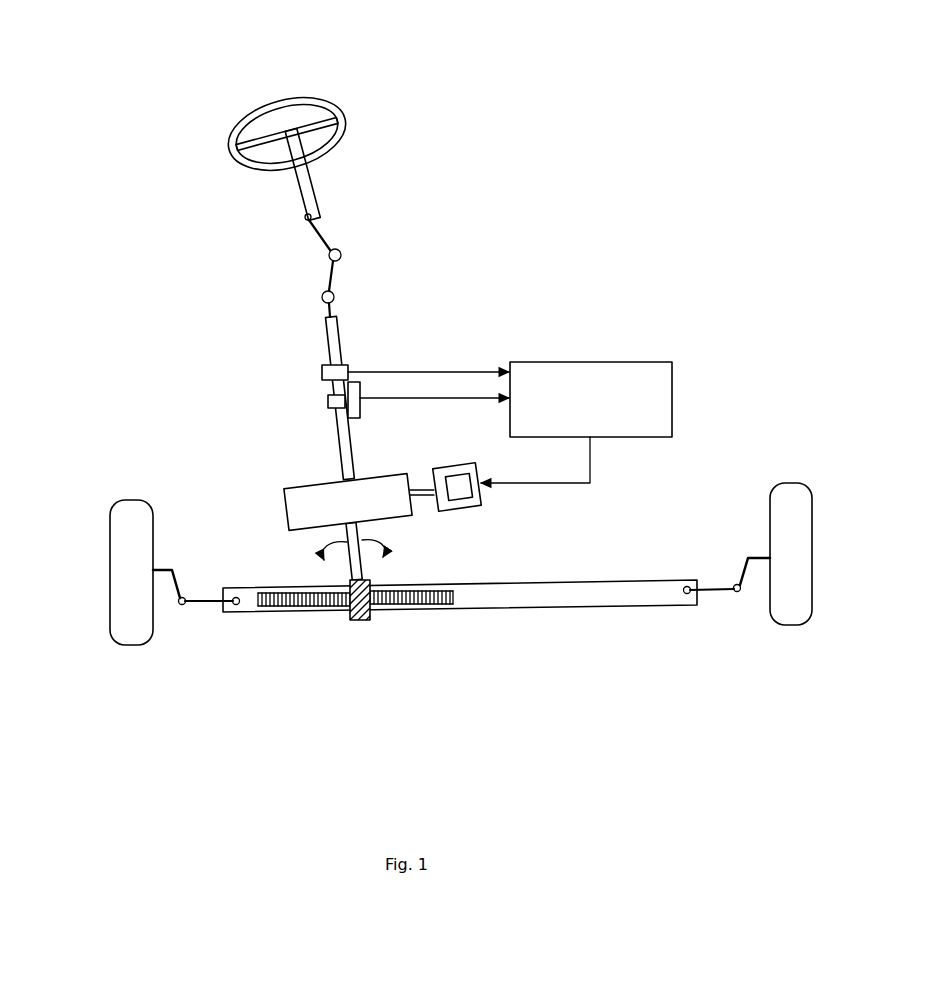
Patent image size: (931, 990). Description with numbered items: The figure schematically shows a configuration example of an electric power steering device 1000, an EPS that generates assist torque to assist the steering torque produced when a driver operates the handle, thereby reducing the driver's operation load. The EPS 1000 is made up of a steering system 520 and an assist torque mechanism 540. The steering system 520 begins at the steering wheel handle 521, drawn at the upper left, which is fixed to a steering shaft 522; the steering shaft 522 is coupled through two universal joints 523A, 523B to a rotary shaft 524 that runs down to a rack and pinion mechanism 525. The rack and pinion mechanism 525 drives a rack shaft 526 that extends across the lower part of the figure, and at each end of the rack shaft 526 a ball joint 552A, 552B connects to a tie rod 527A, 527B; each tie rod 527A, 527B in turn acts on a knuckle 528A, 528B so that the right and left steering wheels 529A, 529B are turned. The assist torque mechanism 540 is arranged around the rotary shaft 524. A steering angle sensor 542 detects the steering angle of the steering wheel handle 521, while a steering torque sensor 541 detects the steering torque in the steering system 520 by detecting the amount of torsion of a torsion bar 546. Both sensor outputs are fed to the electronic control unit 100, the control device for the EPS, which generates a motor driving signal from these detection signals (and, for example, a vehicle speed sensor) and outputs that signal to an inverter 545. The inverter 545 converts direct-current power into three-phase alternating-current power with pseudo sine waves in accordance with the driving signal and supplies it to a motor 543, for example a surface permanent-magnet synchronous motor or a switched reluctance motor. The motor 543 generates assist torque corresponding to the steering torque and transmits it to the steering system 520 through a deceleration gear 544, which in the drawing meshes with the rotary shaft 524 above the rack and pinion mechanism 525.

The electric power steering device 1000 is at (500, 106).
The electronic control unit 100 is at (632, 366).
The steering system 520 is at (298, 320).
The steering wheel handle 521 is at (247, 118).
The steering shaft 522 is at (312, 185).
The universal joint 523A is at (342, 254).
The universal joint 523B is at (335, 296).
The rotary shaft 524 is at (340, 342).
The rack and pinion mechanism 525 is at (371, 630).
The rack shaft 526 is at (497, 597).
The tie rod 527A is at (198, 600).
The tie rod 527B is at (732, 586).
The knuckle 528A is at (170, 570).
The knuckle 528B is at (748, 555).
The steering wheel 529A is at (137, 630).
The steering wheel 529B is at (785, 620).
The assist torque mechanism 540 is at (533, 330).
The steering torque sensor 541 is at (362, 410).
The steering angle sensor 542 is at (349, 368).
The motor 543 is at (457, 465).
The deceleration gear 544 is at (280, 480).
The inverter 545 is at (460, 492).
The torsion bar 546 is at (328, 400).
The ball joint 552A is at (232, 612).
The ball joint 552B is at (686, 596).